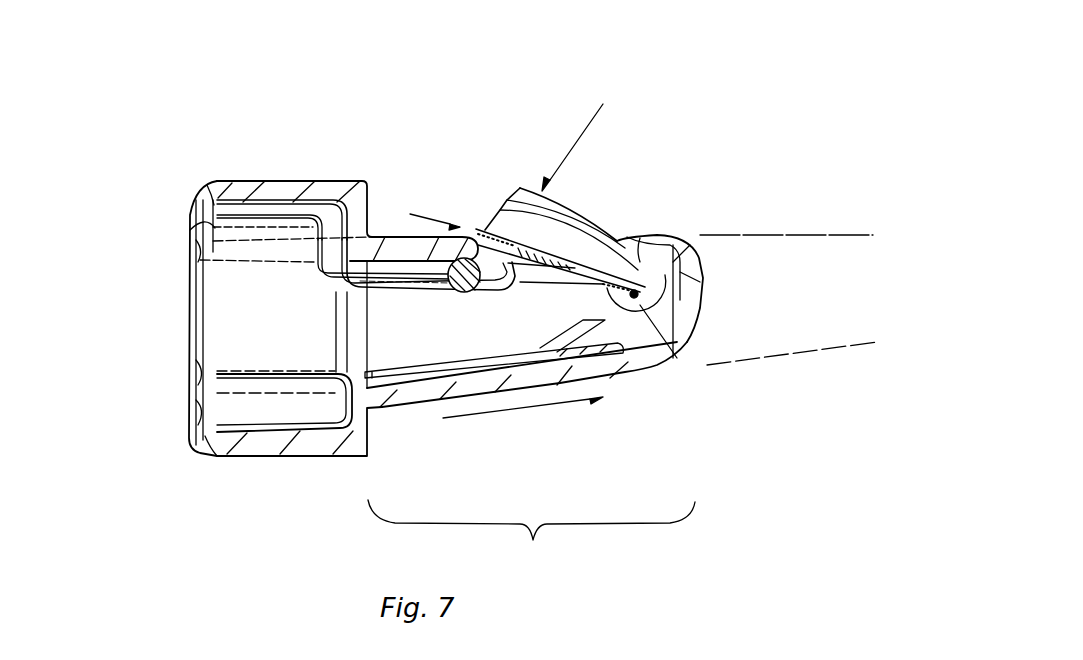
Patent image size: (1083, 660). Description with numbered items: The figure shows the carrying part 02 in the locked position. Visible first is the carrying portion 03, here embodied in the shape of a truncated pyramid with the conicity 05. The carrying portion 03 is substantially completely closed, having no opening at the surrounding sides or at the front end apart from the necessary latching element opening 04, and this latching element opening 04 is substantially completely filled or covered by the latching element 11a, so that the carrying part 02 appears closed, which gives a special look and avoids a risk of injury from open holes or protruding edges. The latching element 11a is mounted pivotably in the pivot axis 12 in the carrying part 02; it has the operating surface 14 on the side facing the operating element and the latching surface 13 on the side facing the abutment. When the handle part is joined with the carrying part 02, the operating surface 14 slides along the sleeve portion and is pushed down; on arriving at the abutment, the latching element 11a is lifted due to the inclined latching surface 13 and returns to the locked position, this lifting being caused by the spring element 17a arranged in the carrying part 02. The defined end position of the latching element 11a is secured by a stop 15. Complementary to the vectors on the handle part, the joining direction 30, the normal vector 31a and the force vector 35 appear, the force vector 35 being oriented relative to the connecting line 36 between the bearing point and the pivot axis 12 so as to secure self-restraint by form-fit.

The carrying part 02 is at (142, 96).
The stop 15 is at (408, 228).
The force vector 35 is at (440, 208).
The latching element opening 04 is at (466, 232).
The latching surface 13 is at (478, 226).
The normal vector 31a is at (583, 113).
The operating surface 14 is at (575, 214).
The latching element 11a is at (618, 240).
The pivot axis 12 is at (675, 365).
The connecting line 36 is at (637, 302).
The joining direction 30 is at (521, 407).
The conicity 05 is at (778, 238).
The carrying portion 03 is at (531, 541).
The spring element 17a is at (400, 285).